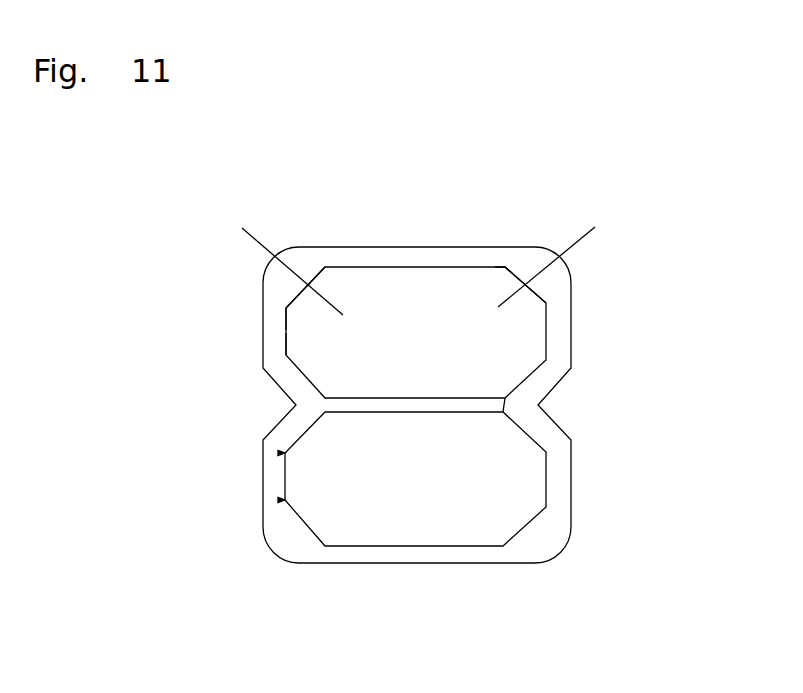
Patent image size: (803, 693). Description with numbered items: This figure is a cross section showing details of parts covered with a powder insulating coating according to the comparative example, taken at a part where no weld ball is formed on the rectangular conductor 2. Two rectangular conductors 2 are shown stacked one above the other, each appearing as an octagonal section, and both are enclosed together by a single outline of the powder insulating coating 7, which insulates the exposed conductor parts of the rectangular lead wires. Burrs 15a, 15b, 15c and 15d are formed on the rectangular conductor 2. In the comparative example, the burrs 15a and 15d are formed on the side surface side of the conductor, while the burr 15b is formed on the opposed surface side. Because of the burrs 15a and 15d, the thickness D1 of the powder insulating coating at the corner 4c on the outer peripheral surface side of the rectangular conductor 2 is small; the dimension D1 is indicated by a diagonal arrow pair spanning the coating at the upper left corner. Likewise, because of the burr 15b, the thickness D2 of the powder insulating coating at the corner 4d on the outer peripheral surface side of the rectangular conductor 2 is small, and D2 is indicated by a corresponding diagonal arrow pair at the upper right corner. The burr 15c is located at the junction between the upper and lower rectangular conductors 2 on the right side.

The rectangular conductor 2 is at (414, 283).
The powder insulating coating 7 is at (281, 383).
The corner 4c is at (327, 277).
The corner 4d is at (538, 306).
The burr 15a is at (278, 355).
The burr 15b is at (504, 256).
The burr 15c is at (512, 403).
The burr 15d is at (276, 307).
The thickness of the powder insulating coating D1 is at (283, 259).
The thickness of the powder insulating coating D2 is at (563, 257).